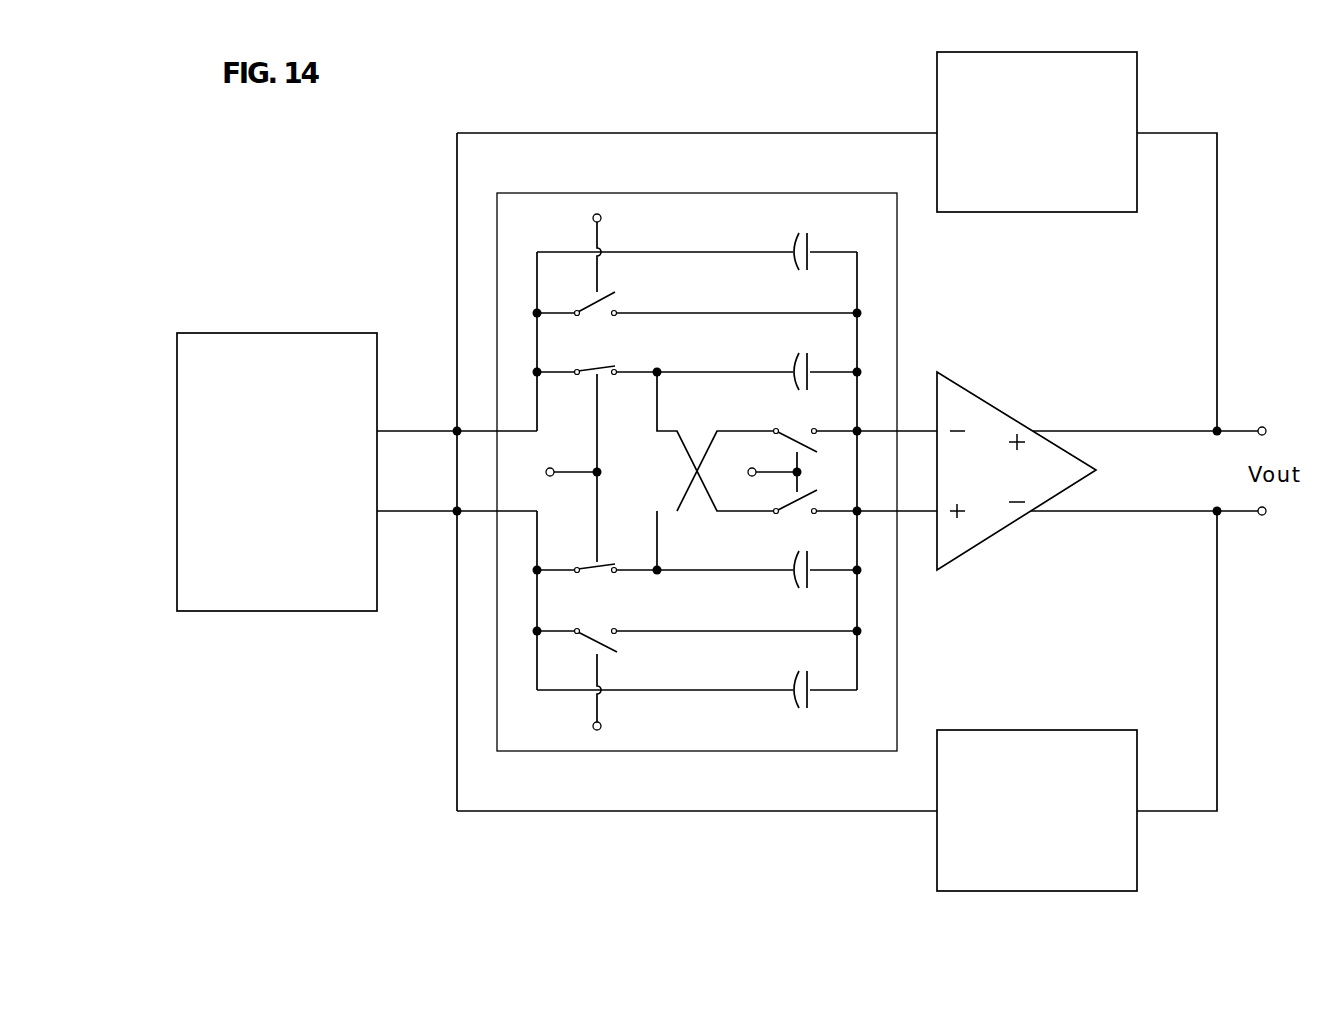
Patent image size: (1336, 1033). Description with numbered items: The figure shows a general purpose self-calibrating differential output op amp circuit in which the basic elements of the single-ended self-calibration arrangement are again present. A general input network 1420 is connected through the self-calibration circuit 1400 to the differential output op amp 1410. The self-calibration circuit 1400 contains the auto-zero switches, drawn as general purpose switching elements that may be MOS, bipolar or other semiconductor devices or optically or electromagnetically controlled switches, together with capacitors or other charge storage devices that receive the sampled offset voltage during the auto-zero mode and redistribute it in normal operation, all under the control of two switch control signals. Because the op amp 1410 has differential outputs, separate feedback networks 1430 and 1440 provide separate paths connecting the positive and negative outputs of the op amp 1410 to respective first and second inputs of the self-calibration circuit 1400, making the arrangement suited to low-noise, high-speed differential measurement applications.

The self-calibration circuit 1400 is at (897, 330).
The op amp 1410 is at (1018, 420).
The input network 1420 is at (277, 333).
The feedback network 1430 is at (1138, 90).
The feedback network 1440 is at (1137, 852).